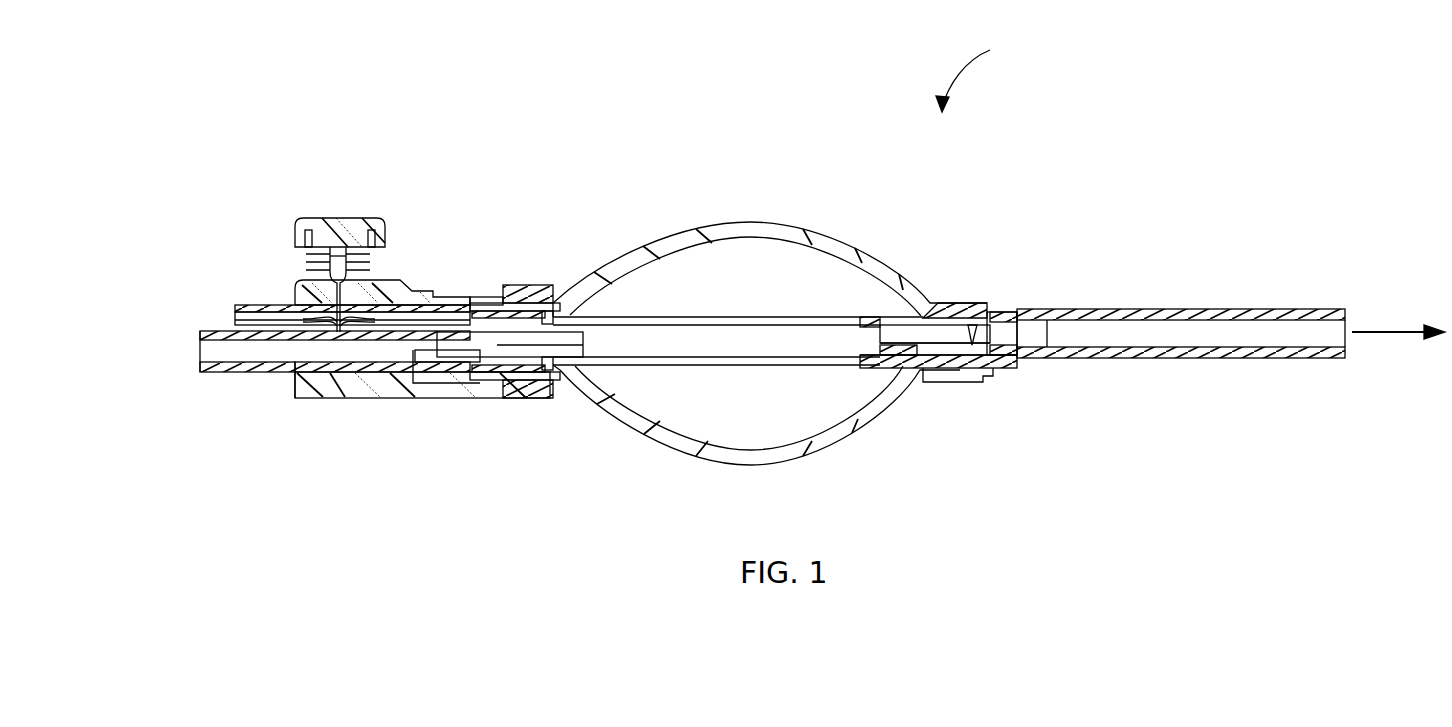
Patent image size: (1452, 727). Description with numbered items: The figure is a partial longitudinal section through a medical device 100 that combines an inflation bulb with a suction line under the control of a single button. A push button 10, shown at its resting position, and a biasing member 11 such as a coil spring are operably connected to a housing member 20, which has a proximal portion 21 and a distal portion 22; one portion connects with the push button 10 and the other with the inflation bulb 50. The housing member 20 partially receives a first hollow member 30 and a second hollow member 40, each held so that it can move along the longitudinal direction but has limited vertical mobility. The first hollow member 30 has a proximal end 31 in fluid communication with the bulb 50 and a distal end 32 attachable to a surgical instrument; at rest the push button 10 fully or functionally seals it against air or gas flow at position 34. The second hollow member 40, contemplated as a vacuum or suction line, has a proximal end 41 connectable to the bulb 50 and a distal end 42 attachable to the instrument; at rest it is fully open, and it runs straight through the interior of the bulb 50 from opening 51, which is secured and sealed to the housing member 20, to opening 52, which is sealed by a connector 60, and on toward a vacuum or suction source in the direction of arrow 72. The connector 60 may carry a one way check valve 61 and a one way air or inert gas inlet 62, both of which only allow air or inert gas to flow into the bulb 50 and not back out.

The medical device 100 is at (990, 72).
The push button 10 is at (333, 218).
The biasing member 11 is at (306, 268).
The housing member 20 is at (420, 398).
The proximal portion 21 is at (535, 398).
The distal portion 22 is at (330, 367).
The first hollow member 30 is at (375, 302).
The proximal end 31 is at (468, 298).
The distal end 32 is at (262, 305).
The position 34 is at (335, 322).
The second hollow member 40 is at (332, 398).
The proximal end 41 is at (442, 372).
The distal end 42 is at (210, 372).
The inflation bulb 50 is at (752, 222).
The opening 51 is at (562, 375).
The opening 52 is at (948, 303).
The connector 60 is at (945, 382).
The one way check valve 61 is at (1018, 360).
The one way air or inert gas inlet 62 is at (986, 383).
The arrow 72 is at (1375, 332).